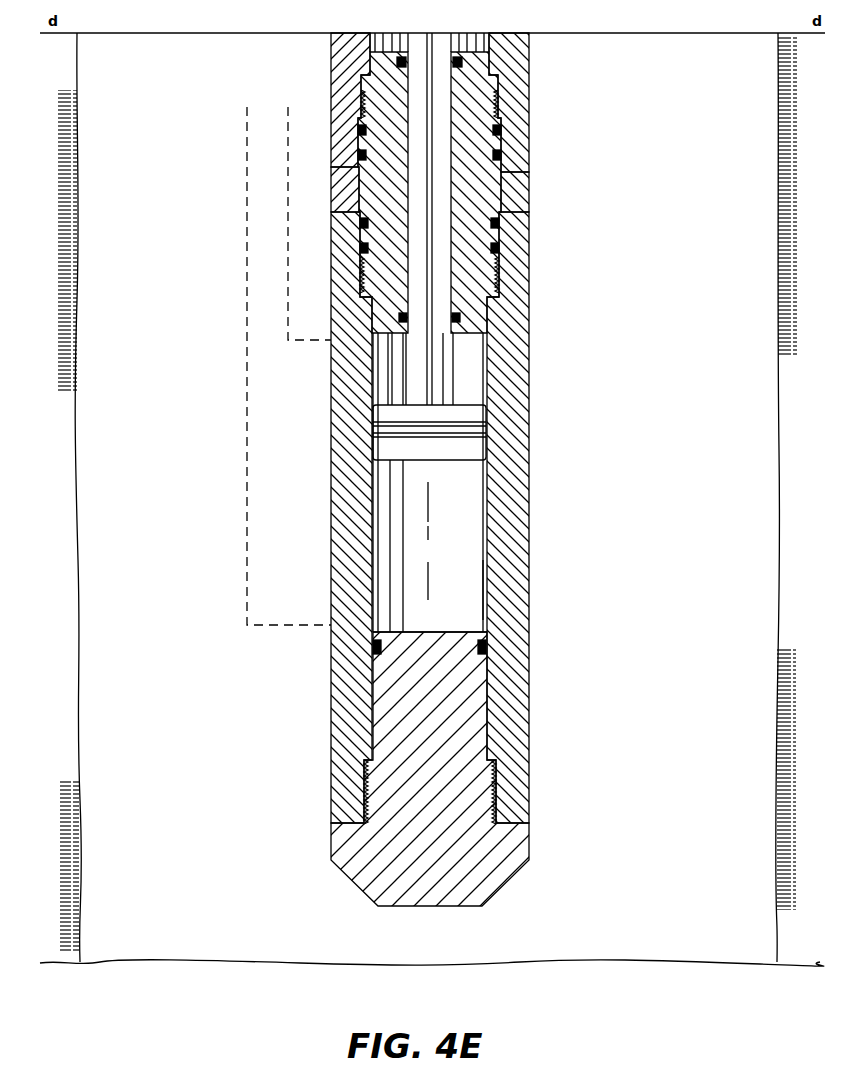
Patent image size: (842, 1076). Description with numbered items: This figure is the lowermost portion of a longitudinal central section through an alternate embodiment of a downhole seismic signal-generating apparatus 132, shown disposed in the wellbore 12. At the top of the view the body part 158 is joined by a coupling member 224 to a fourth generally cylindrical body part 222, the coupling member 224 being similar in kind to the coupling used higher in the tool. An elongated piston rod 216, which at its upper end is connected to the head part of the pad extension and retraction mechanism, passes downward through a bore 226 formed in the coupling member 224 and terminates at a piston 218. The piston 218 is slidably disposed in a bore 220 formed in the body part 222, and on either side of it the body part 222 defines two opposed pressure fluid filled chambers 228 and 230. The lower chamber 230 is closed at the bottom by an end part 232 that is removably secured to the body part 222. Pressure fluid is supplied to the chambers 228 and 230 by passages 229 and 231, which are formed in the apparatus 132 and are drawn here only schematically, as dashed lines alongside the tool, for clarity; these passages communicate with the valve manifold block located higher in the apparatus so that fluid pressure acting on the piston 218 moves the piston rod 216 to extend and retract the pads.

The wellbore 12 is at (83, 494).
The downhole seismic signal-generating apparatus 132 is at (477, 473).
The body part 158 is at (531, 50).
The piston rod 216 is at (452, 100).
The piston 218 is at (483, 462).
The bore 220 is at (485, 580).
The fourth generally cylindrical body part 222 is at (531, 395).
The coupling member 224 is at (531, 183).
The bore 226 is at (446, 272).
The pressure fluid filled chamber 228 is at (484, 372).
The passage 229 is at (291, 341).
The pressure fluid filled chamber 230 is at (446, 559).
The passage 231 is at (278, 628).
The end part 232 is at (522, 876).